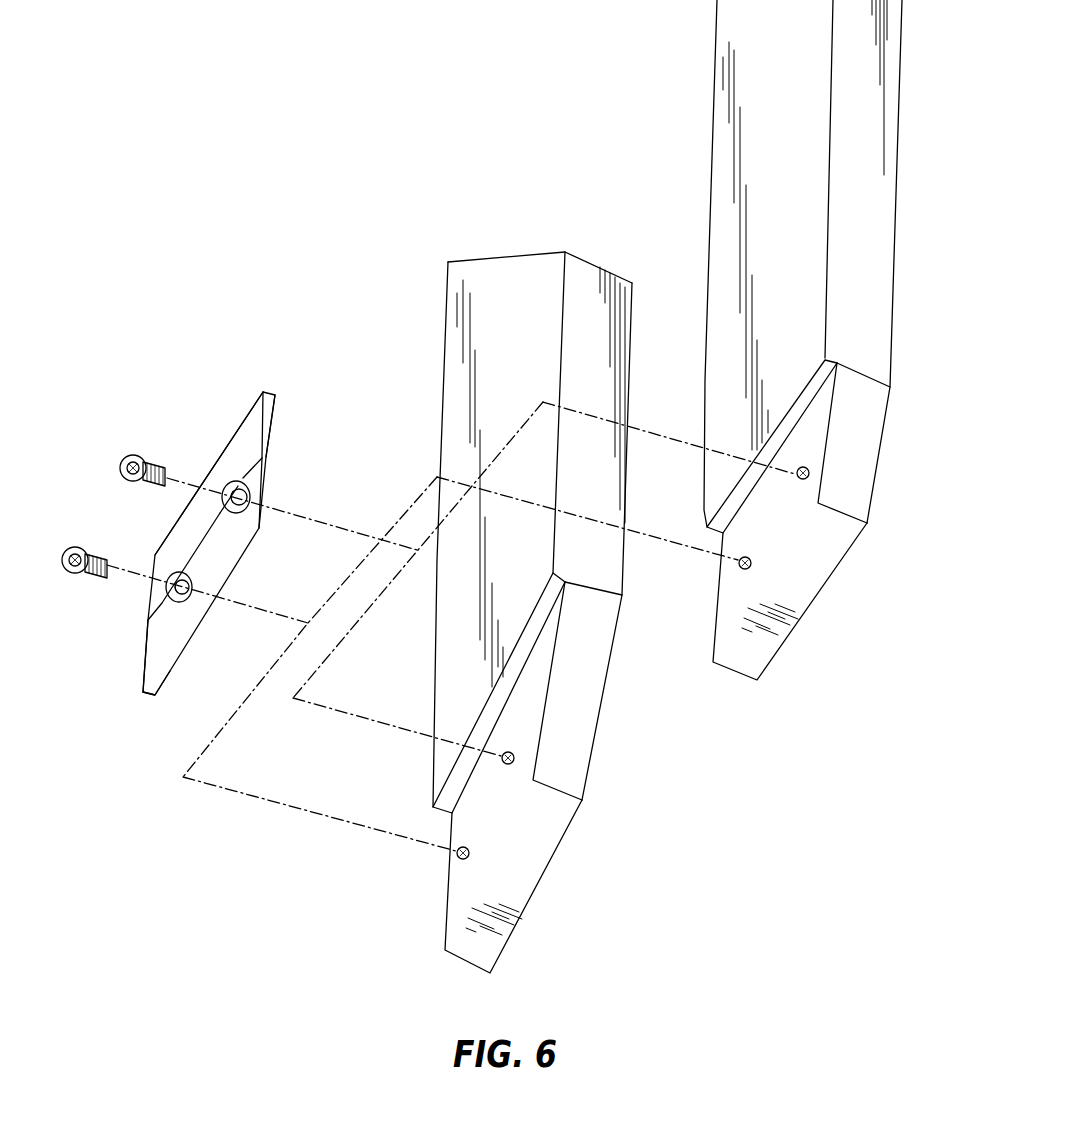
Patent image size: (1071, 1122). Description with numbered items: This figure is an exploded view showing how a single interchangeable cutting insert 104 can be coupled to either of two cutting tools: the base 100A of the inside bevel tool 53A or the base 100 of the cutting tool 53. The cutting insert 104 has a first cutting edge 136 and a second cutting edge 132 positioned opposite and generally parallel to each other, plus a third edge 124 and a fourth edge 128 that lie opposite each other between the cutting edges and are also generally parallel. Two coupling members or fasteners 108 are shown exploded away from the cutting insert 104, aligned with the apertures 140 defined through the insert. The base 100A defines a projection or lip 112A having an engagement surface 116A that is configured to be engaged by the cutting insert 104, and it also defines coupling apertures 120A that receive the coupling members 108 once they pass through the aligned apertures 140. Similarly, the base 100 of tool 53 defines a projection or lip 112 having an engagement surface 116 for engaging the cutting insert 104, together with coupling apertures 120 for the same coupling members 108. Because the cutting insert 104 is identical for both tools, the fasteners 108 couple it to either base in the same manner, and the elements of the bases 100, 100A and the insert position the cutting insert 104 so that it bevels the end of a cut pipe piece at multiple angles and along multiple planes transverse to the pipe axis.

The tool 53 is at (700, 70).
The tool 53A is at (405, 293).
The base 100 is at (870, 267).
The base 100A is at (515, 285).
The cutting insert 104 is at (230, 430).
The coupling members or fasteners 108 is at (68, 550).
The projection or lip 112 is at (800, 392).
The projection or lip 112A is at (530, 613).
The engagement surface 116 is at (785, 425).
The engagement surface 116A is at (500, 693).
The coupling apertures 120 is at (803, 483).
The coupling apertures 120A is at (508, 767).
The third edge 124 is at (147, 663).
The fourth edge 128 is at (270, 455).
The second cutting edge 132 is at (172, 525).
The first cutting edge 136 is at (165, 677).
The apertures 140 is at (247, 507).